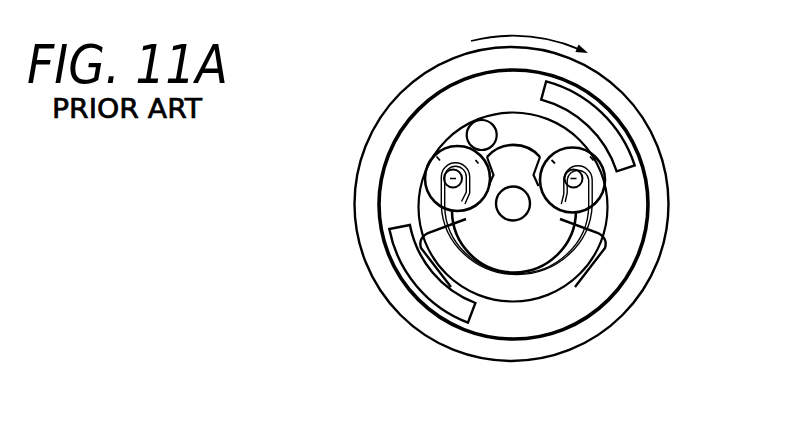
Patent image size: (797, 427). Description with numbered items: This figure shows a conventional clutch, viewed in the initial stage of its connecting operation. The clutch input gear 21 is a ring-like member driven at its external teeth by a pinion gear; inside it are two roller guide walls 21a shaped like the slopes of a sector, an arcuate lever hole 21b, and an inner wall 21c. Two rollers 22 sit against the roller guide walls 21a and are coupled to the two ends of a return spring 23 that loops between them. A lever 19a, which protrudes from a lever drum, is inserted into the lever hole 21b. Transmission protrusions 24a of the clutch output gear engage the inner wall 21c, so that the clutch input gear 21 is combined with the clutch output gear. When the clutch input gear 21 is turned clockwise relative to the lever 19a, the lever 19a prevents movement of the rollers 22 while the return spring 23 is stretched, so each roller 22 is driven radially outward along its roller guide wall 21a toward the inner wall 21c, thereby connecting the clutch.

The lever 19a is at (483, 120).
The clutch input gear 21 is at (640, 103).
The roller guide walls 21a is at (442, 232).
The lever hole 21b is at (553, 132).
The inner wall 21c is at (395, 177).
The rollers 22 is at (603, 191).
The return spring 23 is at (541, 224).
The transmission protrusions 24a is at (621, 157).